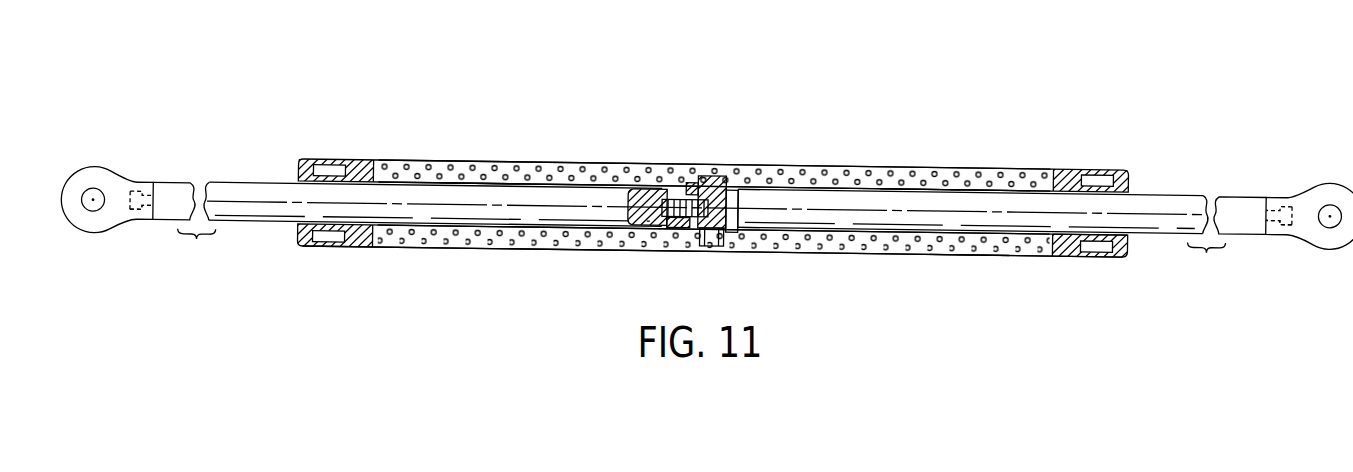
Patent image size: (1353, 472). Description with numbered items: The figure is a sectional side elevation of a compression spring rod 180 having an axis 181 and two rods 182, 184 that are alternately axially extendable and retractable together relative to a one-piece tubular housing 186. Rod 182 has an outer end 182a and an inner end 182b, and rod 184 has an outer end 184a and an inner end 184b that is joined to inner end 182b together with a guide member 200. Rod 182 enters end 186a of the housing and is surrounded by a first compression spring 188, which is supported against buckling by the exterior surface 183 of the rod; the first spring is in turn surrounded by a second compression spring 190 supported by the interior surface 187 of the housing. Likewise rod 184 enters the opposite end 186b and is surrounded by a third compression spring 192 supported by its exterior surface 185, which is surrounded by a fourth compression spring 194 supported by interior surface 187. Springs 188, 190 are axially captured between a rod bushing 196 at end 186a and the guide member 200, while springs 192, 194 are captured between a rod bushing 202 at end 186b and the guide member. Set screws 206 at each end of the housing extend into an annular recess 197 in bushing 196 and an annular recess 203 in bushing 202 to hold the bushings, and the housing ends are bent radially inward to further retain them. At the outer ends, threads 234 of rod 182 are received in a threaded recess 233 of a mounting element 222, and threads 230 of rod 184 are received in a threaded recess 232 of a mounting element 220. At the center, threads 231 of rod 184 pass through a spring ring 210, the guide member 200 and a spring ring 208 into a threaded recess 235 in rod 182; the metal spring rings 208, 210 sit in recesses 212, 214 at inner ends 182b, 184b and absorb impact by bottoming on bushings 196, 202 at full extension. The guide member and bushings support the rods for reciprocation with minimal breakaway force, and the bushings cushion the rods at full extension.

The compression spring rod 180 is at (802, 82).
The axis 181 is at (527, 205).
The rod 182 is at (249, 181).
The outer end 182a is at (162, 183).
The inner end 182b is at (691, 183).
The exterior surface 183 is at (481, 184).
The rod 184 is at (1183, 193).
The outer end 184a is at (1262, 196).
The inner end 184b is at (748, 187).
The exterior surface 185 is at (991, 189).
The tubular housing 186 is at (579, 161).
The end 186a is at (316, 160).
The end 186b is at (1116, 172).
The interior surface 187 is at (430, 159).
The first compression spring 188 is at (468, 185).
The second compression spring 190 is at (432, 236).
The third compression spring 192 is at (922, 189).
The fourth compression spring 194 is at (968, 253).
The rod bushing 196 is at (349, 249).
The annular recess 197 is at (322, 243).
The guide member 200 is at (726, 250).
The rod bushing 202 is at (1077, 258).
The annular recess 203 is at (1100, 176).
The set screws 206 is at (330, 161).
The spring ring 208 is at (703, 176).
The spring ring 210 is at (731, 190).
The recess 212 is at (695, 226).
The recess 214 is at (742, 219).
The mounting element 220 is at (1325, 252).
The mounting element 222 is at (96, 235).
The threads 230 is at (1280, 227).
The threads 231 is at (662, 223).
The threaded recess 232 is at (1286, 206).
The threaded recess 233 is at (138, 186).
The threads 234 is at (143, 212).
The threaded recess 235 is at (665, 195).